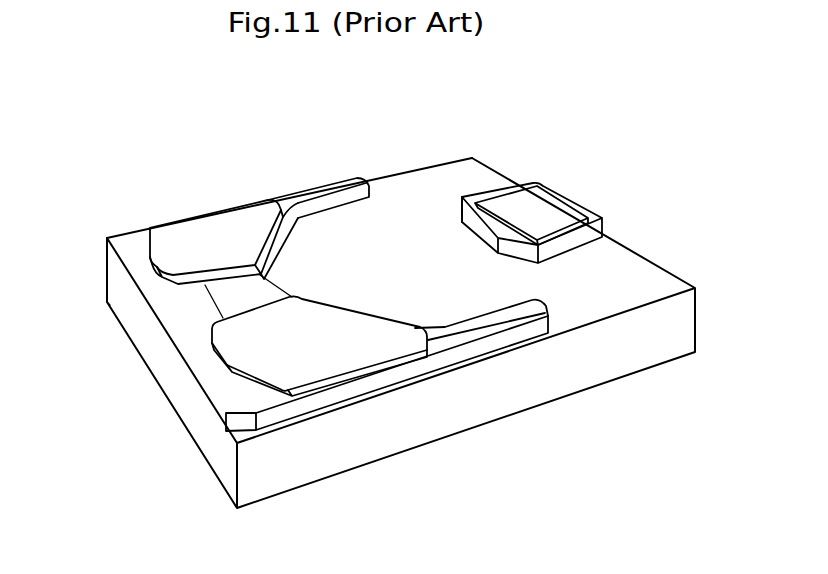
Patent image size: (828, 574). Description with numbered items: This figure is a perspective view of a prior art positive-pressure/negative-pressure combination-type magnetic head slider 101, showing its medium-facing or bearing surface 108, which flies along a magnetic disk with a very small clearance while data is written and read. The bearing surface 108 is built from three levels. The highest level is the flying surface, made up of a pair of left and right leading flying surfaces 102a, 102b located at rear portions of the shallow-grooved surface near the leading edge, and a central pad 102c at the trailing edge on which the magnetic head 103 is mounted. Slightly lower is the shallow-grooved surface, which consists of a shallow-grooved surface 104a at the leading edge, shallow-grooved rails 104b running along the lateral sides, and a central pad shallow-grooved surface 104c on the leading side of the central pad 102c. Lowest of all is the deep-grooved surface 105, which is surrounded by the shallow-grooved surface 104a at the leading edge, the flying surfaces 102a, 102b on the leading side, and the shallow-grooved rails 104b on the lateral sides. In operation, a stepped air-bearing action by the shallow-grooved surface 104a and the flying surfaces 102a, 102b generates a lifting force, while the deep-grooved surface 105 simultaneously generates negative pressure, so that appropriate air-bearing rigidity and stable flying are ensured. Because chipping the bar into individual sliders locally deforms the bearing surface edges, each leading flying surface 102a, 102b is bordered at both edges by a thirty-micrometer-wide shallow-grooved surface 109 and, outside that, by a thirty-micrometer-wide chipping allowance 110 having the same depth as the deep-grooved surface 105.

The slider 101 is at (610, 363).
The leading flying surface 102a is at (183, 248).
The leading flying surface 102b is at (210, 345).
The central pad 102c is at (543, 208).
The magnetic head 103 is at (580, 200).
The shallow-grooved surface 104a is at (173, 310).
The shallow-grooved rails 104b is at (325, 188).
The central pad shallow-grooved surface 104c is at (487, 222).
The deep-grooved surface 105 is at (390, 260).
The medium-facing surface 108 is at (224, 203).
The shallow-grooved surface 109 is at (385, 360).
The chipping allowance 110 is at (340, 408).